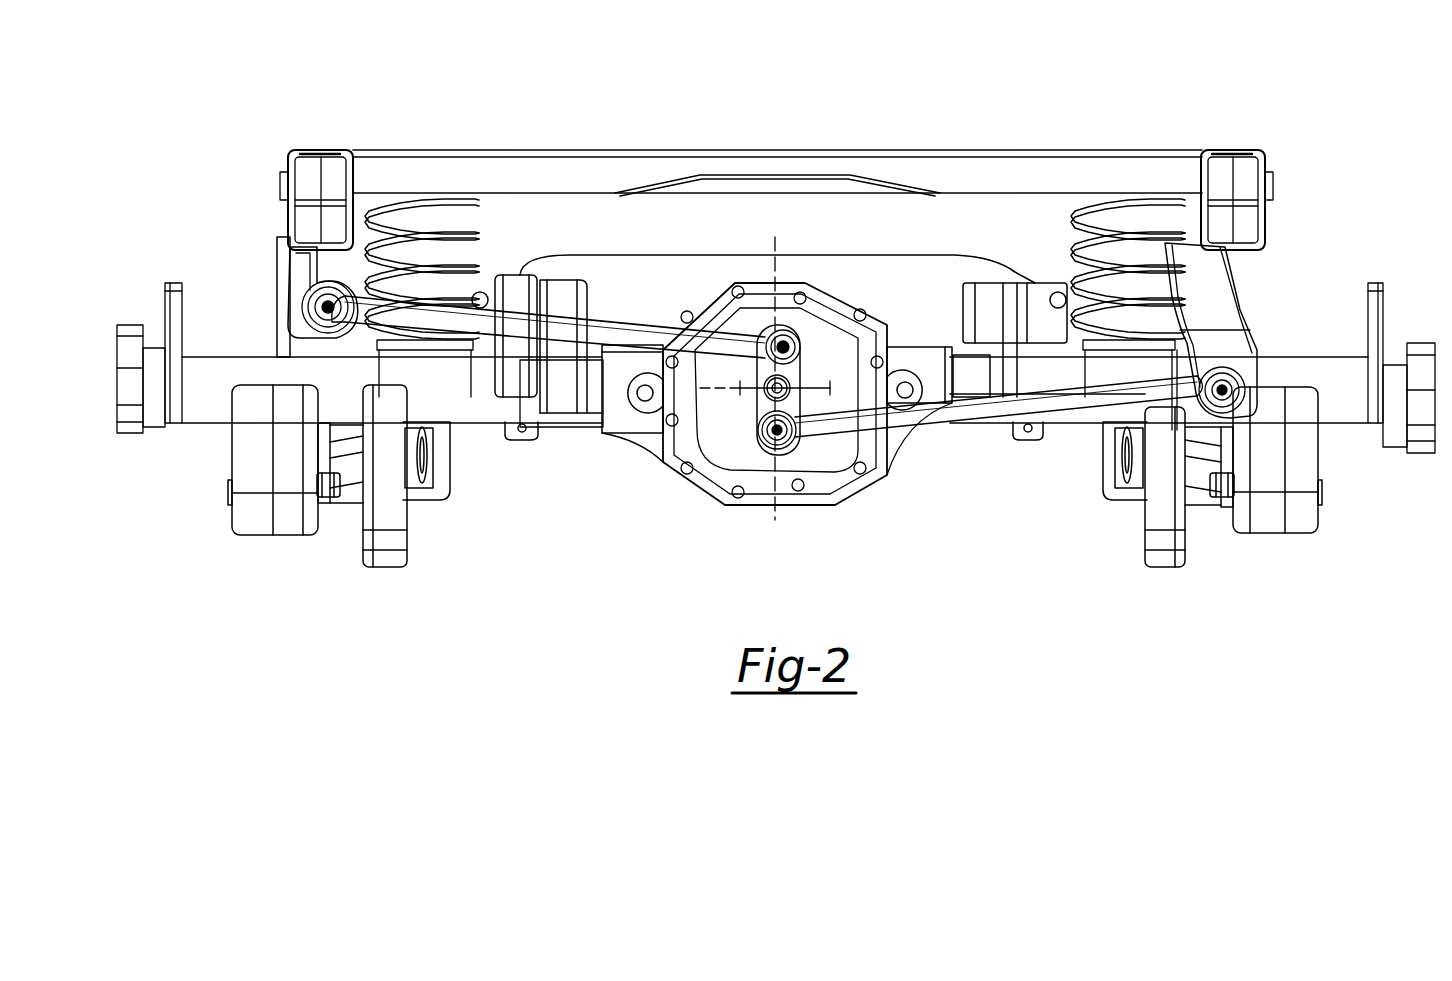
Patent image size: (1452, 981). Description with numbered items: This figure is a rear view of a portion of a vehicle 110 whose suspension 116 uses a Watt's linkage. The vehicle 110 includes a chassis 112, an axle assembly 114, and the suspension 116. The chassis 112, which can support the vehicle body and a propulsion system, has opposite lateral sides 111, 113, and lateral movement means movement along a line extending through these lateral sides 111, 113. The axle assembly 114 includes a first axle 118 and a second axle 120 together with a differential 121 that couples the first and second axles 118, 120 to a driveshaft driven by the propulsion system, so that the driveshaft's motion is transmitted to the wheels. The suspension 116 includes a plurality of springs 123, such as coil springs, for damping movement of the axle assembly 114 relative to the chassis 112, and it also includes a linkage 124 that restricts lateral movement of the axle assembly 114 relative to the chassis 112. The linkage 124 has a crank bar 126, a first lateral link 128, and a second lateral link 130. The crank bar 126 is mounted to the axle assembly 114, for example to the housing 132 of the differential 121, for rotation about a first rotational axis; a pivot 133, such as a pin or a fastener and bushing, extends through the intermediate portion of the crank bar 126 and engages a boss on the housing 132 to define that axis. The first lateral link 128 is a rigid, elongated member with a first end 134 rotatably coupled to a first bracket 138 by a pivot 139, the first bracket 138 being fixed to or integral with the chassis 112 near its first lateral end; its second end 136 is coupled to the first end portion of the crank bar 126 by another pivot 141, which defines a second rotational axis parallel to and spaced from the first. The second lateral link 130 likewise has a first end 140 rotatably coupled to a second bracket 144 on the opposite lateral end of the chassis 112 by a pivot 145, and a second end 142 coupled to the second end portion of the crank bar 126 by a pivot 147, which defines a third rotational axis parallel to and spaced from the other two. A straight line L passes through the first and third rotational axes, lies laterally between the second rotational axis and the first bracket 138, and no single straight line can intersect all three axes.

The vehicle 110 is at (788, 100).
The lateral side 111 is at (287, 218).
The chassis 112 is at (1100, 140).
The lateral side 113 is at (1265, 218).
The axle assembly 114 is at (570, 432).
The suspension 116 is at (440, 195).
The first axle 118 is at (203, 412).
The second axle 120 is at (1353, 412).
The differential 121 is at (823, 498).
The springs 123 is at (1078, 253).
The linkage 124 is at (600, 303).
The crank bar 126 is at (745, 494).
The first lateral link 128 is at (607, 330).
The second lateral link 130 is at (978, 410).
The housing 132 is at (730, 452).
The pivot 133 is at (767, 395).
The first end 134 is at (318, 262).
The second end 136 is at (783, 333).
The first bracket 138 is at (300, 296).
The pivot 139 is at (326, 308).
The first end 140 is at (1177, 395).
The pivot 141 is at (795, 345).
The second end 142 is at (794, 437).
The second bracket 144 is at (1217, 340).
The pivot 145 is at (1225, 388).
The pivot 147 is at (771, 448).